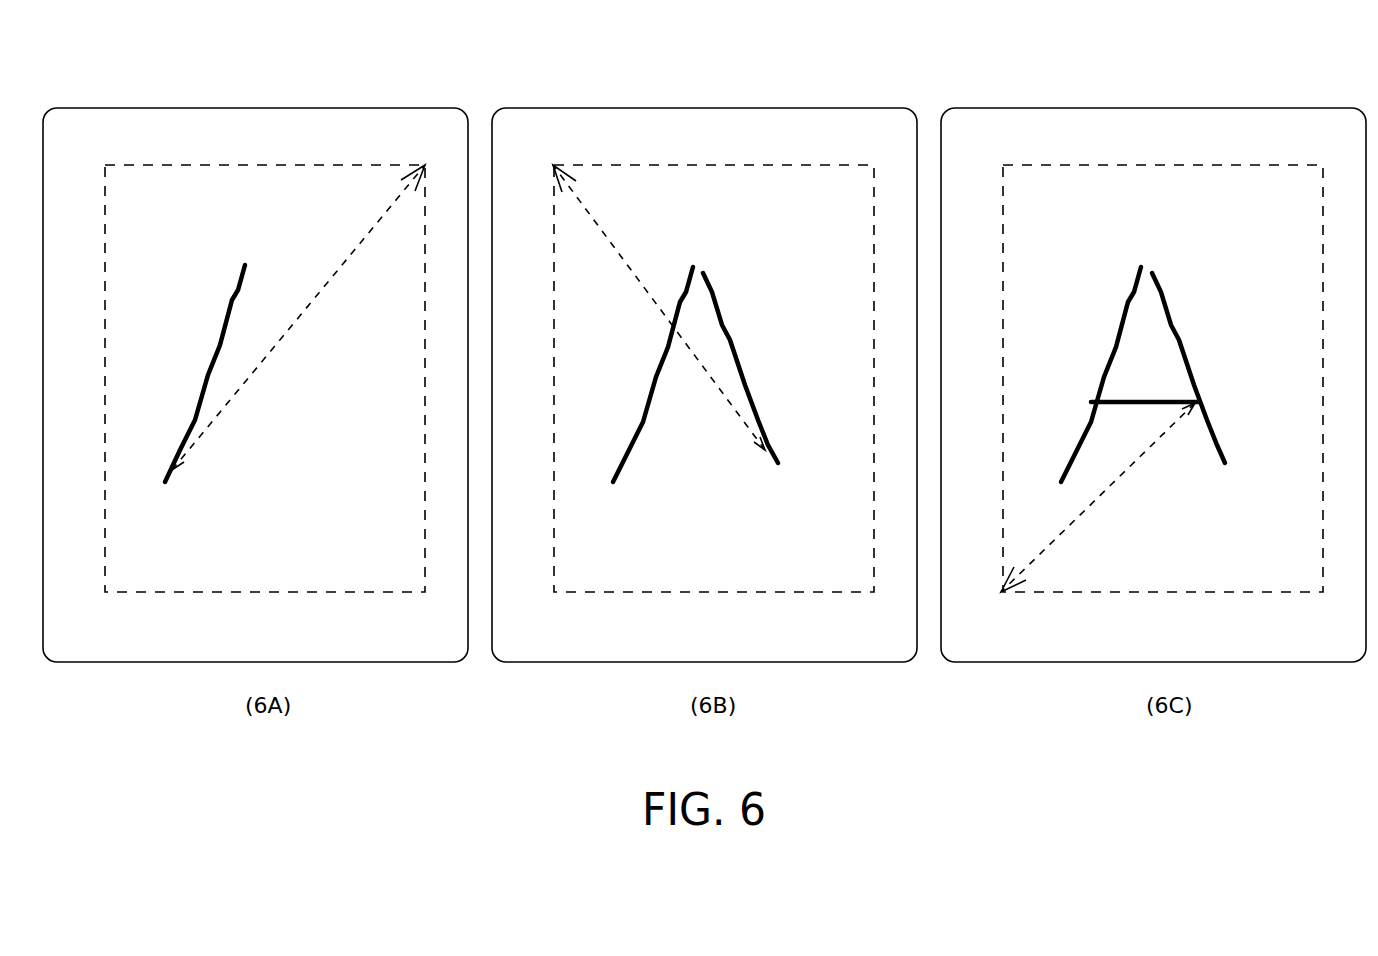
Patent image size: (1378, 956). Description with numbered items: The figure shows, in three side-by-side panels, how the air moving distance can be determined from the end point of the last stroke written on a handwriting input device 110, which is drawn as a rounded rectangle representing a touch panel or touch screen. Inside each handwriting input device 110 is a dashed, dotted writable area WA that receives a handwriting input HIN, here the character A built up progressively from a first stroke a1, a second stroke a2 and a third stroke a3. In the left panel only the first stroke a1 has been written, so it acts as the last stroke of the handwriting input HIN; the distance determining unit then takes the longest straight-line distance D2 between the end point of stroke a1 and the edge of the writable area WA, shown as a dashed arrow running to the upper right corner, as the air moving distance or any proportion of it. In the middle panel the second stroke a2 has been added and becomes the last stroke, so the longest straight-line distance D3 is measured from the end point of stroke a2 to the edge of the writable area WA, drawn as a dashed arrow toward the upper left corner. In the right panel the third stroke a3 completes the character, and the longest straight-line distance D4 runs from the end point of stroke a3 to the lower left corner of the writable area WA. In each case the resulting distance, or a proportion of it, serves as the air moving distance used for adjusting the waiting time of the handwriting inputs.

The handwriting input device 110 is at (257, 108).
The writable area WA is at (265, 165).
The handwriting input HIN is at (270, 277).
The first stroke a1 is at (205, 377).
The second stroke a2 is at (732, 336).
The third stroke a3 is at (1112, 405).
The longest straight-line distance D2 is at (298, 317).
The longest straight-line distance D3 is at (659, 307).
The longest straight-line distance D4 is at (1098, 497).